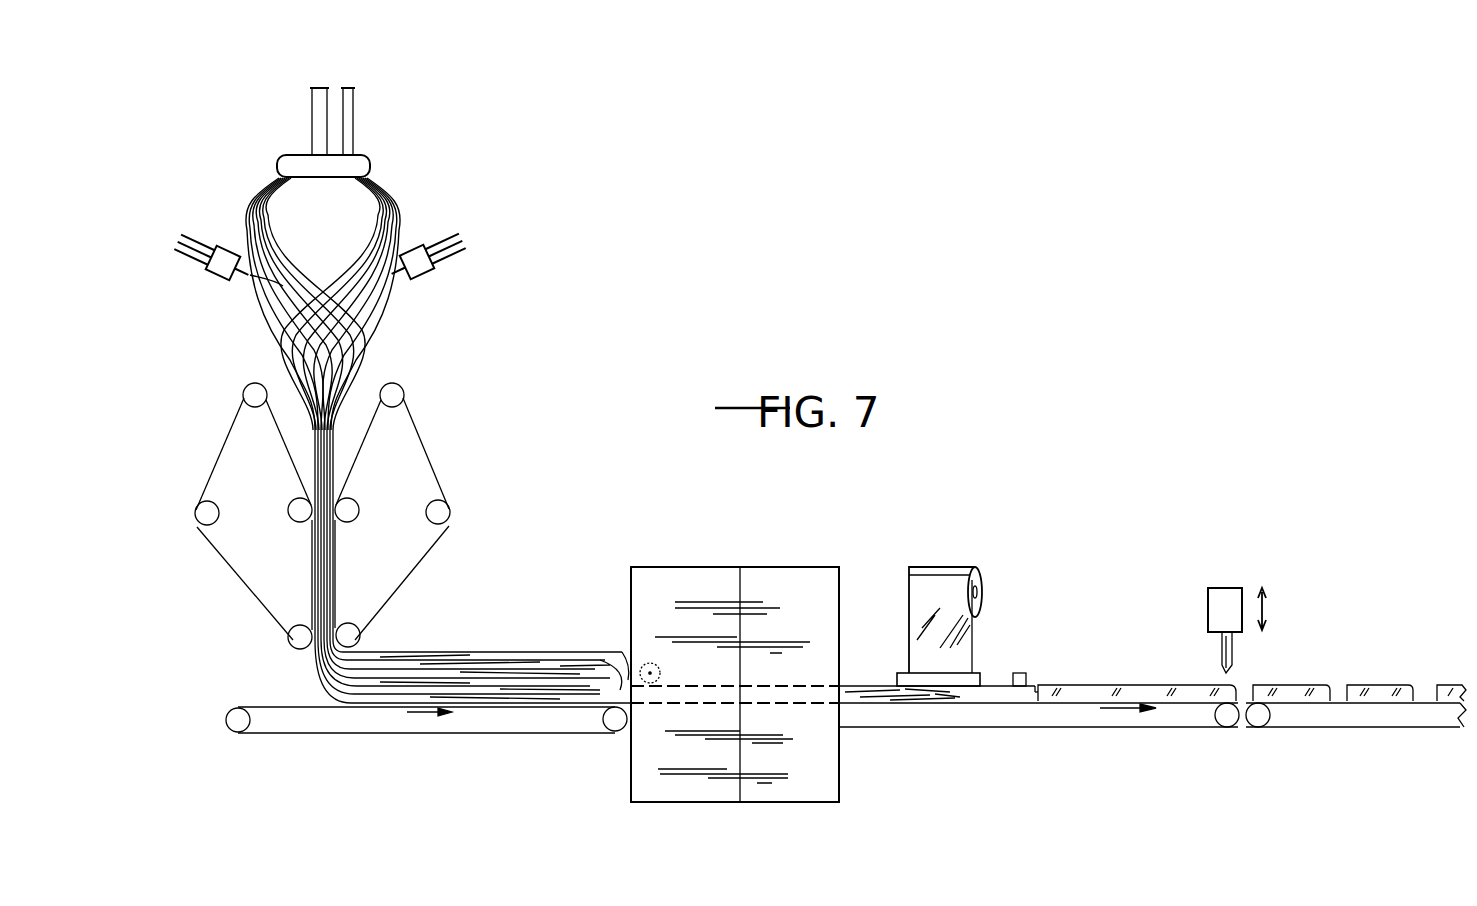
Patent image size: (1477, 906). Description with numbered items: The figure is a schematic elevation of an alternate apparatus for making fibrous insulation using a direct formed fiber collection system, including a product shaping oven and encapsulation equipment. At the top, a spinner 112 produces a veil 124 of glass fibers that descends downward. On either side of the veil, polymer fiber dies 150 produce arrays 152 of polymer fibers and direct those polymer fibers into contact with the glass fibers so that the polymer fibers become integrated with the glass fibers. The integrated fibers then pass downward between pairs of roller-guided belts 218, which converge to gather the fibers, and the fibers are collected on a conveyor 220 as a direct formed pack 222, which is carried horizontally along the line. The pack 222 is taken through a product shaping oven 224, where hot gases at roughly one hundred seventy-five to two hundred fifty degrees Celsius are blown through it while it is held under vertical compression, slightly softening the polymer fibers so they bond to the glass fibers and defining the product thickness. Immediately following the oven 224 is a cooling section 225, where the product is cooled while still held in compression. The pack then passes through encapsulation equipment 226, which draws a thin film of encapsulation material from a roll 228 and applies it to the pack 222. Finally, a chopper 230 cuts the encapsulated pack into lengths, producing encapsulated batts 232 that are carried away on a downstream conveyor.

The spinner 112 is at (296, 155).
The veil of glass fibers 124 is at (390, 203).
The polymer fiber dies 150 is at (228, 243).
The arrays of polymer fibers 152 is at (250, 278).
The roller belt guides 218 is at (220, 447).
The conveyor 220 is at (367, 733).
The direct formed pack 222 is at (313, 680).
The product shaping oven 224 is at (630, 773).
The cooling section 225 is at (839, 766).
The encapsulation equipment 226 is at (995, 673).
The roll 228 is at (985, 570).
The chopper 230 is at (1207, 608).
The encapsulated batts 232 is at (1370, 685).